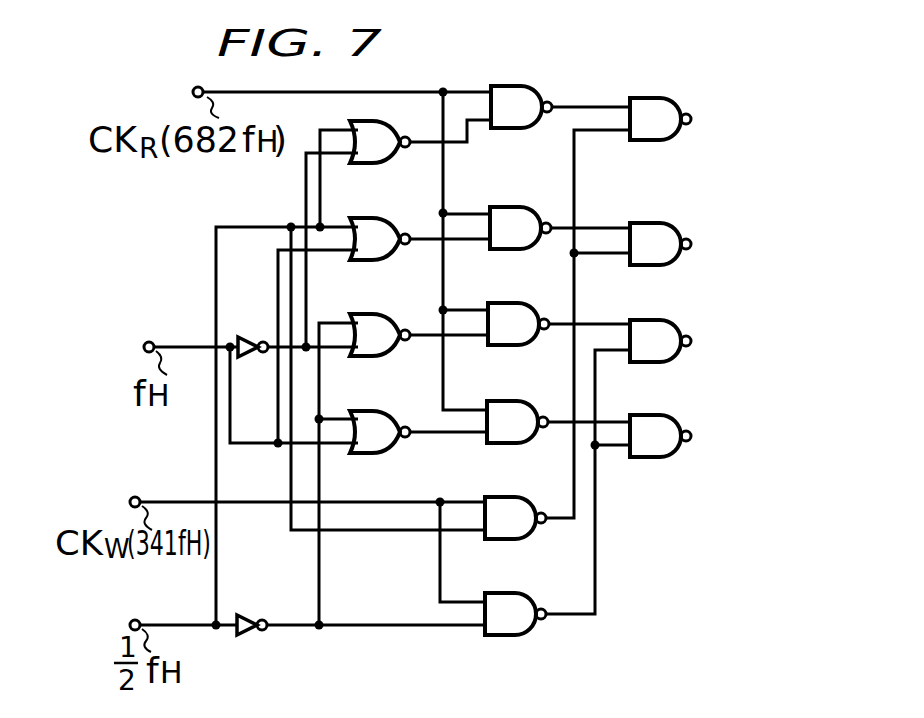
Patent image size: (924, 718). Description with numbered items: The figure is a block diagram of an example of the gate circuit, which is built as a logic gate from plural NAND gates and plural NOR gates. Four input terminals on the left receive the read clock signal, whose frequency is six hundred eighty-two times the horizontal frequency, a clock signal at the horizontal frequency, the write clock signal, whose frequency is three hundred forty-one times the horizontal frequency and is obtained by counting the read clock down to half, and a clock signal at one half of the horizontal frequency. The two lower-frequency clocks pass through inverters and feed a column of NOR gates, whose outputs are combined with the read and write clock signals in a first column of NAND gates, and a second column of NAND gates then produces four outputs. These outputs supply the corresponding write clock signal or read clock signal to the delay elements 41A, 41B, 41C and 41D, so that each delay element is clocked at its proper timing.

The delay element 41A is at (691, 119).
The delay element 41B is at (691, 244).
The delay element 41C is at (691, 341).
The delay element 41D is at (691, 436).